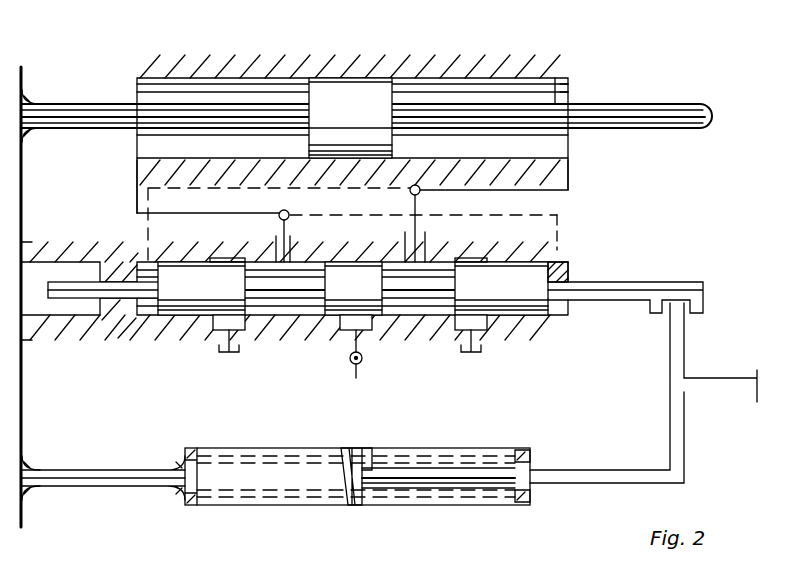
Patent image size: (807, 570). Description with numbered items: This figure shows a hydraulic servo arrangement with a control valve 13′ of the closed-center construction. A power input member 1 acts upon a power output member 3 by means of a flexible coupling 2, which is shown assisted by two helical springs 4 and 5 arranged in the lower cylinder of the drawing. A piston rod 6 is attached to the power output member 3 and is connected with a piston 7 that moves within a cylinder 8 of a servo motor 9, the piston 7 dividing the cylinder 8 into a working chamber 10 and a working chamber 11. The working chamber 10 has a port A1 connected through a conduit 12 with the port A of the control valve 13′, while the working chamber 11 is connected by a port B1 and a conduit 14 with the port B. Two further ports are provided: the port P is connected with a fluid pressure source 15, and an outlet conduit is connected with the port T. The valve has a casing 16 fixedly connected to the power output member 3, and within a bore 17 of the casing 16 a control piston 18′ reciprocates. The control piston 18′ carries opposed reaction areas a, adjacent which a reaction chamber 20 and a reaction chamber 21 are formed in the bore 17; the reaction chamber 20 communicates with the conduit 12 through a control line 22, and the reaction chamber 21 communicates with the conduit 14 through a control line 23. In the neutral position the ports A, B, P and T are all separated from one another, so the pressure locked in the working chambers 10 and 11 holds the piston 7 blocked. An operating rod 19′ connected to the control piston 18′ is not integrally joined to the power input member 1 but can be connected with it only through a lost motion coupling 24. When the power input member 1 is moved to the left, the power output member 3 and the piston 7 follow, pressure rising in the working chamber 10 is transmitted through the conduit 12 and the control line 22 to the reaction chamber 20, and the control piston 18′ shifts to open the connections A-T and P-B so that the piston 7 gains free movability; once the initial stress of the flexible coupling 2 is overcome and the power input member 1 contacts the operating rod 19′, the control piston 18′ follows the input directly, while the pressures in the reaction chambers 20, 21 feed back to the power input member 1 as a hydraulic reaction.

The power input member 1 is at (727, 378).
The flexible coupling 2 is at (421, 512).
The power output member 3 is at (22, 372).
The helical spring 4 is at (278, 497).
The helical spring 5 is at (483, 498).
The piston rod 6 is at (82, 110).
The piston 7 is at (372, 92).
The cylinder 8 is at (572, 90).
The servo motor 9 is at (446, 60).
The working chamber 10 is at (274, 77).
The working chamber 11 is at (545, 75).
The conduit 12 is at (223, 213).
The control valve 13′ is at (312, 348).
The conduit 14 is at (548, 214).
The fluid pressure source 15 is at (355, 365).
The casing 16 is at (110, 312).
The bore 17 is at (548, 262).
The control piston 18′ is at (382, 318).
The operating rod 19′ is at (652, 282).
The reaction chamber 20 is at (568, 270).
The reaction chamber 21 is at (137, 272).
The control line 22 is at (495, 216).
The control line 23 is at (273, 227).
The lost motion coupling 24 is at (712, 275).
The port A is at (312, 235).
The port B is at (424, 223).
The port A1 is at (137, 158).
The port B1 is at (568, 160).
The port P is at (379, 355).
The port T is at (380, 356).
The reaction areas a is at (158, 312).